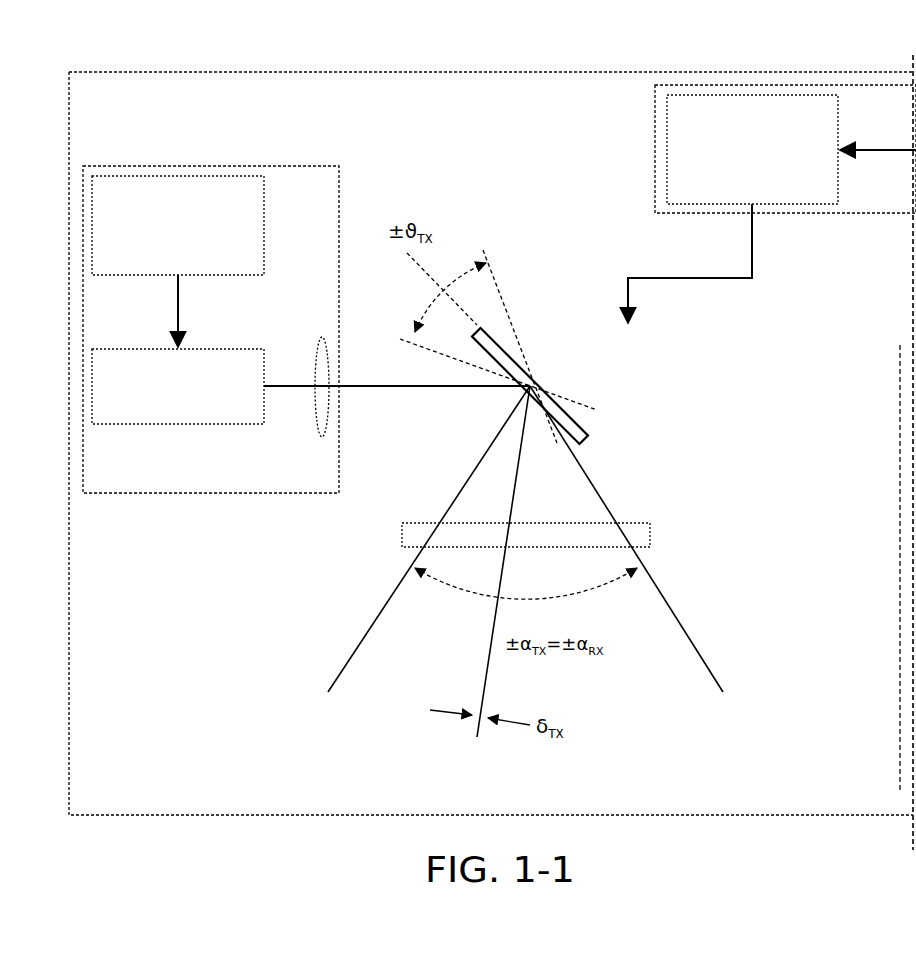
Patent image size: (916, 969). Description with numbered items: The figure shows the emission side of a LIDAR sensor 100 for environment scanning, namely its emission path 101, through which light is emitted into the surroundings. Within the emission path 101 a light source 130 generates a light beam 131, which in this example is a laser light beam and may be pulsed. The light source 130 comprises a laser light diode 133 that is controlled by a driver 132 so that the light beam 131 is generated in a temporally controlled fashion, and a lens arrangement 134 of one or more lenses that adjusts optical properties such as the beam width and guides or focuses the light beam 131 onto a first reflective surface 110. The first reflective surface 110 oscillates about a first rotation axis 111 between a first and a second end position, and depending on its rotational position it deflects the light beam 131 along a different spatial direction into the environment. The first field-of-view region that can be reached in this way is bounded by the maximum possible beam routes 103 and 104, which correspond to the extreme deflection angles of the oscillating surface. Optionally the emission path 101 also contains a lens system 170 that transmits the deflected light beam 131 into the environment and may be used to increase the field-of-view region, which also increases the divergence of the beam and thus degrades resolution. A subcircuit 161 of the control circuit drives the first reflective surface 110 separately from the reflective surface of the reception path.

The LIDAR sensor 100 is at (805, 42).
The emission path 101 is at (320, 55).
The beam route 103 is at (370, 627).
The beam route 104 is at (697, 640).
The first reflective surface 110 is at (592, 437).
The first rotation axis 111 is at (528, 364).
The light source 130 is at (205, 495).
The light beam 131 is at (425, 388).
The driver 132 is at (150, 277).
The laser light diode 133 is at (182, 425).
The lens arrangement 134 is at (315, 340).
The subcircuit 161 is at (718, 208).
The lens system 170 is at (718, 506).